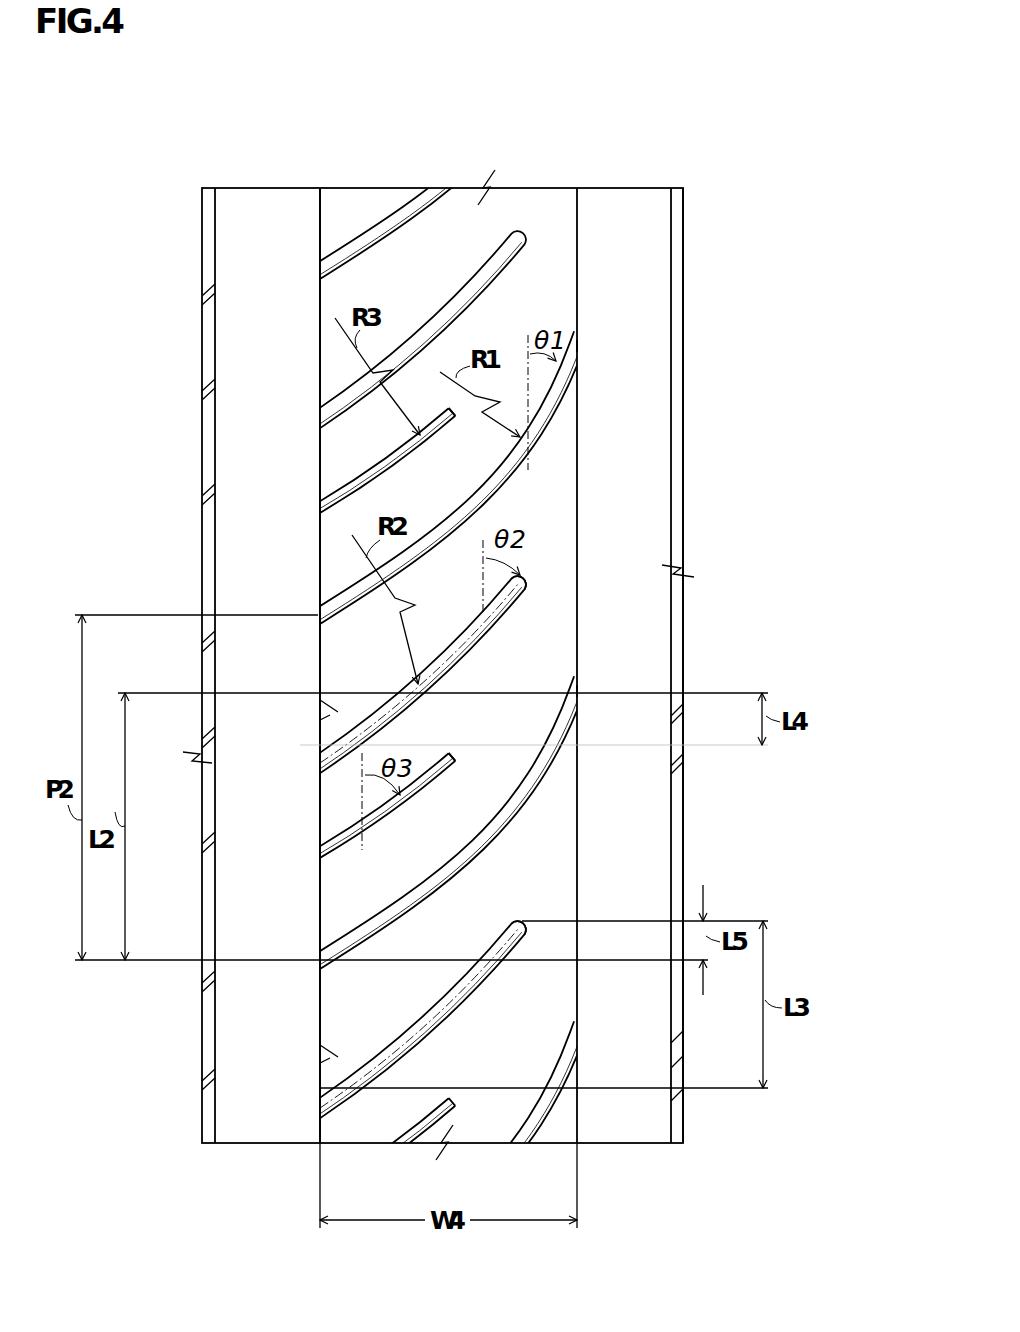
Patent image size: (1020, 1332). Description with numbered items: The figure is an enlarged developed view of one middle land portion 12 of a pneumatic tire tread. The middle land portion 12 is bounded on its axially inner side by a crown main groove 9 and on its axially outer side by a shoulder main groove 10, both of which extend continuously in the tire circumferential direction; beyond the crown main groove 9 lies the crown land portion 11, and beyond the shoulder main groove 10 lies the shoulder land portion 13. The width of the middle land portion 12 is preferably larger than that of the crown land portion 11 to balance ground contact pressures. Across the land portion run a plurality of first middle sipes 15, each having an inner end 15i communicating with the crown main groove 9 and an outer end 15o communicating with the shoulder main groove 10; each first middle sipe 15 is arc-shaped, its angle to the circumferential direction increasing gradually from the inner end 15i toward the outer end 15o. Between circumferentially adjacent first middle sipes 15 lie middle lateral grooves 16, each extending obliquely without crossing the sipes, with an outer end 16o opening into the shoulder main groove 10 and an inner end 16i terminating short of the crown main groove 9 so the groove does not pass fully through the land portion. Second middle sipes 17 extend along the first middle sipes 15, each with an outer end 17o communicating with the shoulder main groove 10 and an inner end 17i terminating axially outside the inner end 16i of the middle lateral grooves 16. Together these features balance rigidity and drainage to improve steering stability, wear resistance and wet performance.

The crown main groove 9 is at (615, 223).
The shoulder main groove 10 is at (275, 226).
The crown land portion 11 is at (677, 183).
The middle land portion 12 is at (458, 233).
The shoulder land portion 13 is at (208, 183).
The first middle sipe 15 is at (484, 490).
The inner end of first middle sipe 15i is at (577, 350).
The outer end of first middle sipe 15o is at (320, 612).
The middle lateral groove 16 is at (452, 317).
The inner end of middle lateral groove 16i is at (522, 580).
The outer end of middle lateral groove 16o is at (320, 755).
The second middle sipe 17 is at (360, 482).
The inner end of second middle sipe 17i is at (456, 758).
The outer end of second middle sipe 17o is at (320, 857).